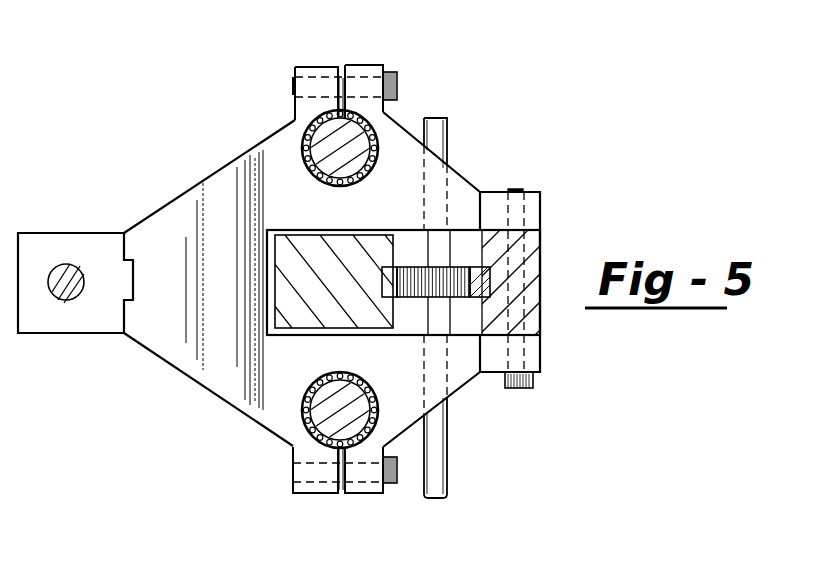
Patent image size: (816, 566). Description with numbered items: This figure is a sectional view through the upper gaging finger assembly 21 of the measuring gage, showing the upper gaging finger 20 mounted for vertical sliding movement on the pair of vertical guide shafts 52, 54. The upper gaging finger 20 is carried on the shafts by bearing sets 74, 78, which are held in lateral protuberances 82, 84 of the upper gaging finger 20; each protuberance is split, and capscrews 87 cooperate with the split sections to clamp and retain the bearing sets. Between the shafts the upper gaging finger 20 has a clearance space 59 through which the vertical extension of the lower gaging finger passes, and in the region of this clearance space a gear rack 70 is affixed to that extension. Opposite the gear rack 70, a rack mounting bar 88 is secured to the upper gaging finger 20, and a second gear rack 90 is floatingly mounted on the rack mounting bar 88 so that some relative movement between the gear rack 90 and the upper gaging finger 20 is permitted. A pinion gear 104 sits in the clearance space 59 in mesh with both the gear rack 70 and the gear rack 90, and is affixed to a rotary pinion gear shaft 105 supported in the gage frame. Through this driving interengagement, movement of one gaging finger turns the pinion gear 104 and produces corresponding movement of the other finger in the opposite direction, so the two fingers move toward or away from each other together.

The upper gaging finger 20 is at (52, 242).
The upper gaging finger assembly 21 is at (176, 368).
The vertical guide shaft 52 is at (306, 413).
The vertical guide shaft 54 is at (302, 130).
The clearance space 59 is at (426, 327).
The gear rack 70 is at (396, 266).
The bearing set 74 is at (294, 490).
The bearing set 78 is at (404, 127).
The lateral protuberance 82 is at (318, 495).
The lateral protuberance 84 is at (307, 64).
The capscrews 87 is at (396, 72).
The rack mounting bar 88 is at (540, 240).
The gear rack 90 is at (472, 267).
The pinion gear 104 is at (457, 266).
The rotary pinion gear shaft 105 is at (446, 458).